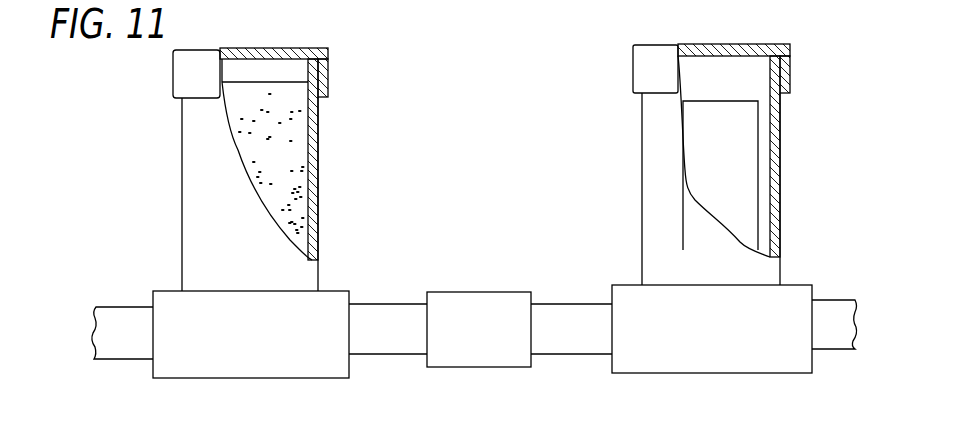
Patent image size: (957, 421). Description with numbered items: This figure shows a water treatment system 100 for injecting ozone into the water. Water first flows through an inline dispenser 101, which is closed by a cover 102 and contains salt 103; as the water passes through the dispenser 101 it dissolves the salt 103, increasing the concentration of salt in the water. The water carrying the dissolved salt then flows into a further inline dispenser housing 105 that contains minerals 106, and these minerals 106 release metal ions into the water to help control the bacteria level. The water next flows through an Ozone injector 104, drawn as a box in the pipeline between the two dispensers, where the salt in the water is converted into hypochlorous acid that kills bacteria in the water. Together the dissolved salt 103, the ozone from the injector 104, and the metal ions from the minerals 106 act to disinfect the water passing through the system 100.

The system 100 is at (470, 110).
The inline dispenser 101 is at (318, 202).
The cover 102 is at (328, 70).
The salt 103 is at (285, 153).
The Ozone injector 104 is at (481, 291).
The inline dispenser housing 105 is at (780, 190).
The minerals 106 is at (728, 129).